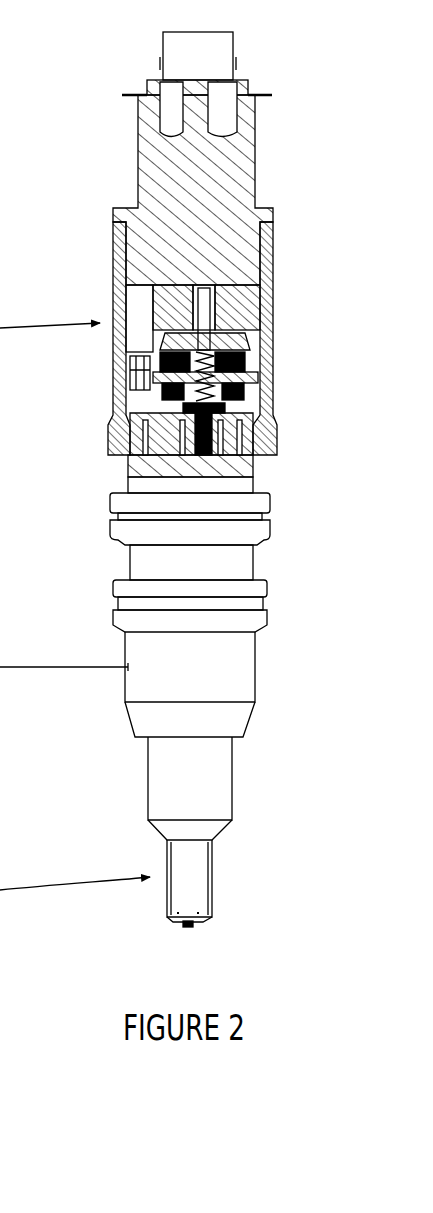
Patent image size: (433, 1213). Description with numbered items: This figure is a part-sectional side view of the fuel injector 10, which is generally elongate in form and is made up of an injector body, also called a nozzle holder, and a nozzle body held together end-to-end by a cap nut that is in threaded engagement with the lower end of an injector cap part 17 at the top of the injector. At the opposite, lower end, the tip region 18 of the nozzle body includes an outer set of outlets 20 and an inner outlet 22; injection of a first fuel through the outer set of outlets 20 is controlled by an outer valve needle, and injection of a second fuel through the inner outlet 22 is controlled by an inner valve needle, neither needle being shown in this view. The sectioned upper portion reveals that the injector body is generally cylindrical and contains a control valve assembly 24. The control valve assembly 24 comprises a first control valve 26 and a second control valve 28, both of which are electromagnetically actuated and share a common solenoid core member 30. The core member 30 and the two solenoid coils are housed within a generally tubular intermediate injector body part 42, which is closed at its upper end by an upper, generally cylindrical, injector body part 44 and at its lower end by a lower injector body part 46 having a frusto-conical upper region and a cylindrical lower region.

The fuel injector 10 is at (326, 126).
The injector cap part 17 is at (130, 186).
The tip region 18 is at (199, 925).
The outer set of outlets 20 is at (193, 913).
The inner outlet 22 is at (182, 925).
The control valve assembly 24 is at (282, 340).
The first control valve 26 is at (142, 334).
The second control valve 28 is at (145, 432).
The solenoid core member 30 is at (245, 380).
The intermediate injector body part 42 is at (243, 382).
The upper injector body part 44 is at (270, 292).
The lower injector body part 46 is at (237, 432).